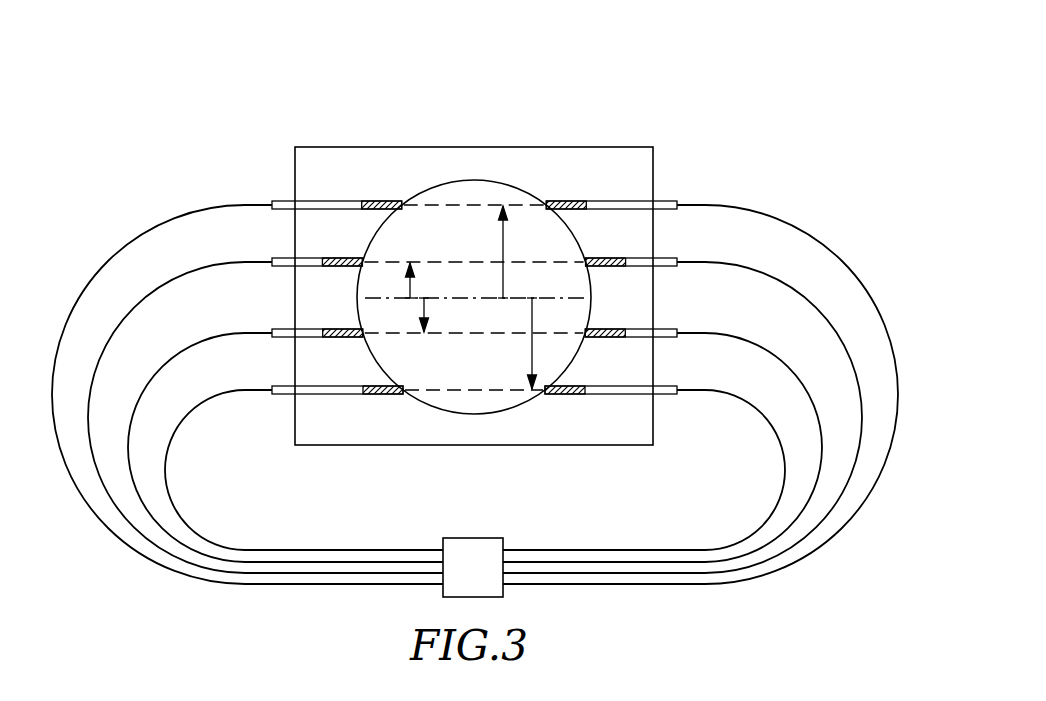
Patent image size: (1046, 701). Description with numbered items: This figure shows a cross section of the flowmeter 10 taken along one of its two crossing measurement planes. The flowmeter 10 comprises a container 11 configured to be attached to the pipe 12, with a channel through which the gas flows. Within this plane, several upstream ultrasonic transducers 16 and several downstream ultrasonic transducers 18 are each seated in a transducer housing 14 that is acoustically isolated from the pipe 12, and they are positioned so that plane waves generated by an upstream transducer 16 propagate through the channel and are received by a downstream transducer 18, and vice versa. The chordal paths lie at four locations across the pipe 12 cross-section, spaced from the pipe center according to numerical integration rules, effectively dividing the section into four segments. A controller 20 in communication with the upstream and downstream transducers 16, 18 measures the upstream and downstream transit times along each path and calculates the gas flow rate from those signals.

The flowmeter 10 is at (510, 170).
The container 11 is at (476, 245).
The pipe 12 is at (400, 183).
The transducer housing 14 is at (284, 192).
The upstream ultrasonic transducer 16 is at (318, 250).
The downstream ultrasonic transducer 18 is at (625, 250).
The controller 20 is at (484, 530).